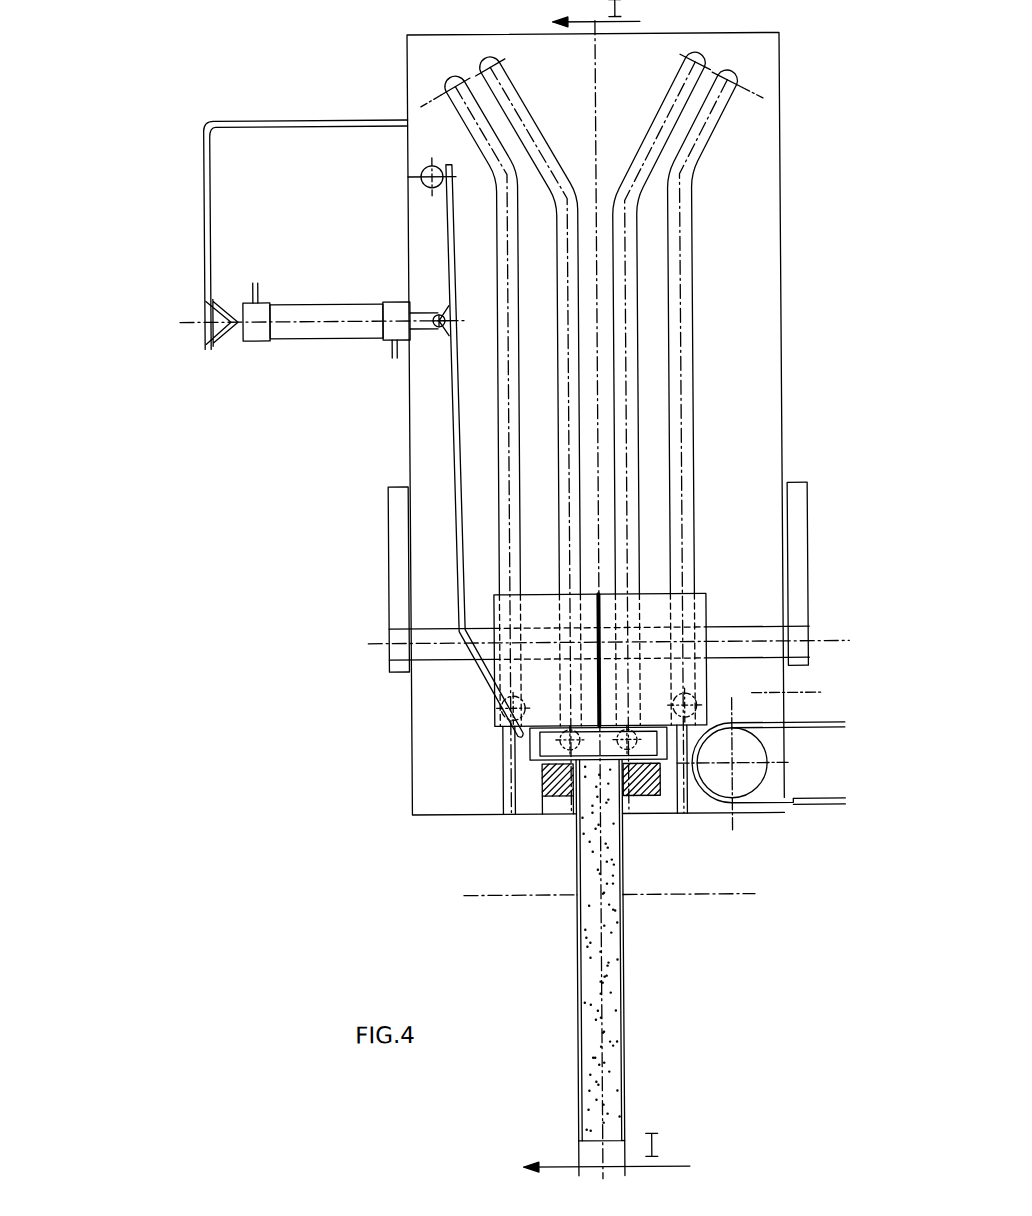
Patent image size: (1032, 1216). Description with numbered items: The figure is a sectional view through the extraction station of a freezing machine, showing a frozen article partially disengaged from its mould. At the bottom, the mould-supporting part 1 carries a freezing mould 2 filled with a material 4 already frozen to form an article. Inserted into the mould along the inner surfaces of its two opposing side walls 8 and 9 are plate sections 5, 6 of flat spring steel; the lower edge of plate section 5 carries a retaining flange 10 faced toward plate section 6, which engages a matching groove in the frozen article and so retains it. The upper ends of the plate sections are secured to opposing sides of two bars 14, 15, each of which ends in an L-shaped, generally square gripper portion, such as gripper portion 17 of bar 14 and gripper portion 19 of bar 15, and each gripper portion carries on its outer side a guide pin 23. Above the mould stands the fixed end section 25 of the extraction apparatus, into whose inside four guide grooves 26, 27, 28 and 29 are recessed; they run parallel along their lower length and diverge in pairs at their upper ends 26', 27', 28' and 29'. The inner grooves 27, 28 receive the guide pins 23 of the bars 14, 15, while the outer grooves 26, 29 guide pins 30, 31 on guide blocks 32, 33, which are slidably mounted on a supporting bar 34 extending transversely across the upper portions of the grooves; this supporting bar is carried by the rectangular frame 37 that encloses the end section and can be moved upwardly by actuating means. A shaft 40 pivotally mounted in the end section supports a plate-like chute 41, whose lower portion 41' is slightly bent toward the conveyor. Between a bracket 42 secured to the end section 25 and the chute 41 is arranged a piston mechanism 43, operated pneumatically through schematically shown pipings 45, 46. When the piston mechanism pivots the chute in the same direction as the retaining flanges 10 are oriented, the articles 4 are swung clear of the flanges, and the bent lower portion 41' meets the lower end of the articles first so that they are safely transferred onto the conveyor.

The freezing mould-supporting part 1 is at (681, 896).
The freezing mould 2 is at (577, 1153).
The material frozen to form an article 4 is at (580, 994).
The plate section 5 is at (571, 848).
The plate section 6 is at (617, 868).
The side wall of freezing mould 8 is at (572, 946).
The side wall of freezing mould 9 is at (619, 947).
The retaining flange 10 is at (576, 889).
The bar 14 is at (541, 800).
The bar 15 is at (623, 771).
The gripper portion 17 is at (553, 770).
The gripper portion 19 is at (707, 753).
The guide pin 23 is at (530, 752).
The end section 25 is at (756, 201).
The guide groove 26 is at (637, 447).
The diverging upper end of guide groove 26' is at (425, 54).
The guide groove 27 is at (654, 437).
The diverging upper end of guide groove 27' is at (467, 38).
The guide groove 28 is at (720, 434).
The diverging upper end of guide groove 28' is at (694, 39).
The guide groove 29 is at (747, 443).
The diverging upper end of guide groove 29' is at (757, 49).
The pin 30 is at (531, 740).
The pin 31 is at (694, 707).
The guide block 32 is at (490, 607).
The guide block 33 is at (702, 600).
The supporting bar 34 is at (421, 633).
The rectangular frame 37 is at (395, 513).
The shaft 40 is at (419, 176).
The chute 41 is at (431, 451).
The lower portion of chute 41' is at (435, 703).
The bracket 42 is at (322, 119).
The piston mechanism 43 is at (284, 335).
The piping / shaft 45 is at (259, 292).
The piping / conveyor belt 46 is at (388, 348).